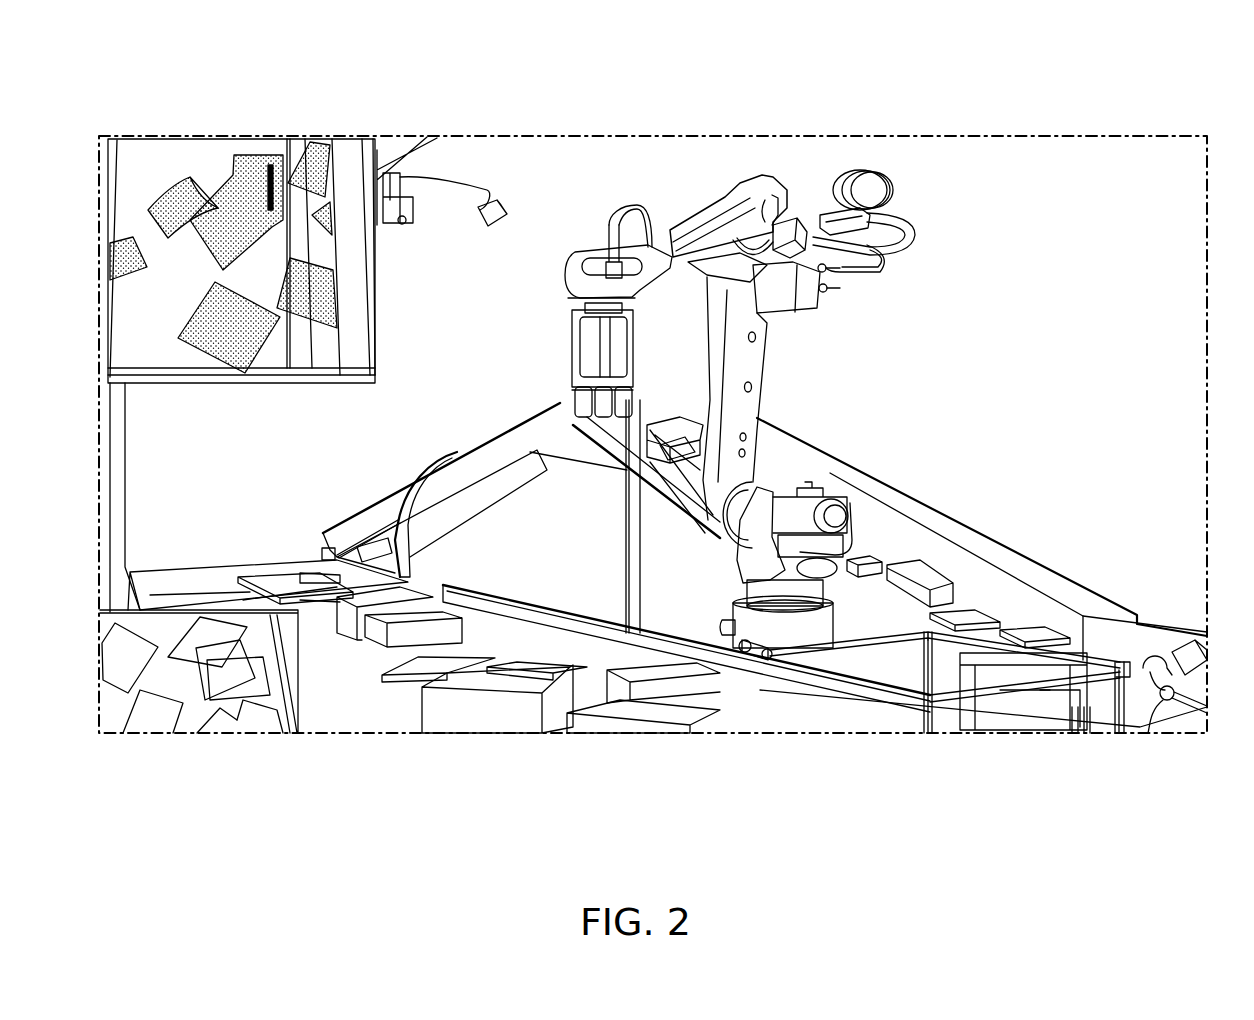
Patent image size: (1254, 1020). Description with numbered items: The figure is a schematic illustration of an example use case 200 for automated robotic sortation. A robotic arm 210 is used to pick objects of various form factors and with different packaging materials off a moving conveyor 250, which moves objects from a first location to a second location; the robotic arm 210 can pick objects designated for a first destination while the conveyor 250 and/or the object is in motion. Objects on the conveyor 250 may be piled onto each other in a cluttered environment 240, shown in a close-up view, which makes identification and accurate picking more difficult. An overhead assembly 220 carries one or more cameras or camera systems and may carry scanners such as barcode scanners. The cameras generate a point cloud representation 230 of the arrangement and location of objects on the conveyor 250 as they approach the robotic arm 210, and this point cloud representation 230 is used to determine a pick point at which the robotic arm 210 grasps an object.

The use case 200 is at (1135, 62).
The robotic arm 210 is at (913, 125).
The overhead assembly 220 is at (455, 127).
The point cloud representation 230 is at (198, 125).
The cluttered environment 240 is at (202, 742).
The conveyor 250 is at (386, 706).